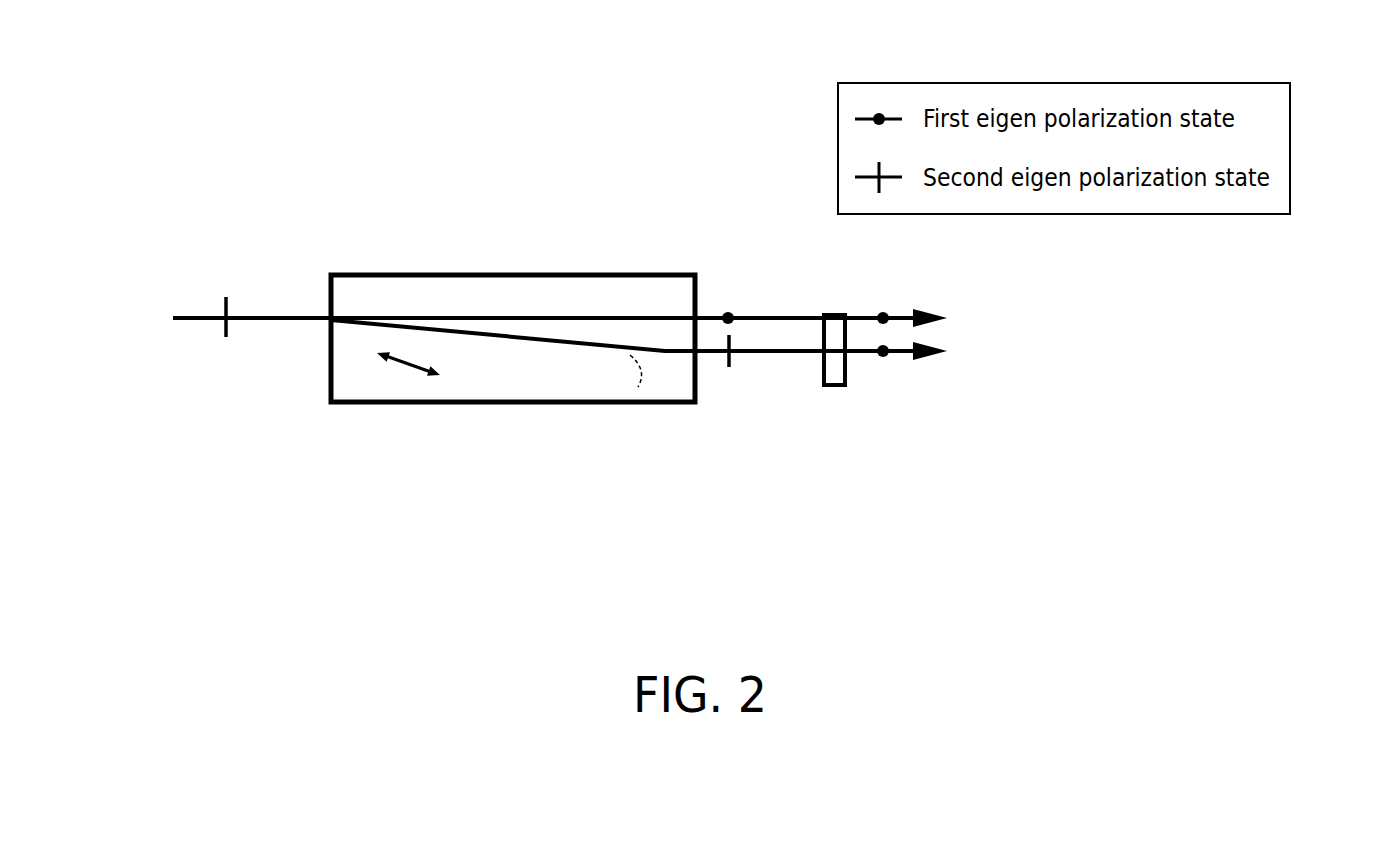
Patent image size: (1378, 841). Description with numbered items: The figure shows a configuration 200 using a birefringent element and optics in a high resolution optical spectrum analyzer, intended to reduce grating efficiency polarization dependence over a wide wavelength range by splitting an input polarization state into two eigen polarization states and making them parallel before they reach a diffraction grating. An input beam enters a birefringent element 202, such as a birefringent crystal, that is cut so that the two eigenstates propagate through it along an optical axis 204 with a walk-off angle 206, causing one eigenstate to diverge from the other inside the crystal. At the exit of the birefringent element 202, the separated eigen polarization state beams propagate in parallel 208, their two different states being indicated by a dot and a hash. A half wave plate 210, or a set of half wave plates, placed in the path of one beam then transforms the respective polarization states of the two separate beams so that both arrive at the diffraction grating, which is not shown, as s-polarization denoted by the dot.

The configuration 200 is at (735, 51).
The birefringent element 202 is at (460, 260).
The optical axis 204 is at (380, 384).
The walk-off angle 206 is at (615, 366).
The parallel propagation of separated eigen polarization state beams 208 is at (1016, 344).
The half wave plate 210 is at (860, 402).